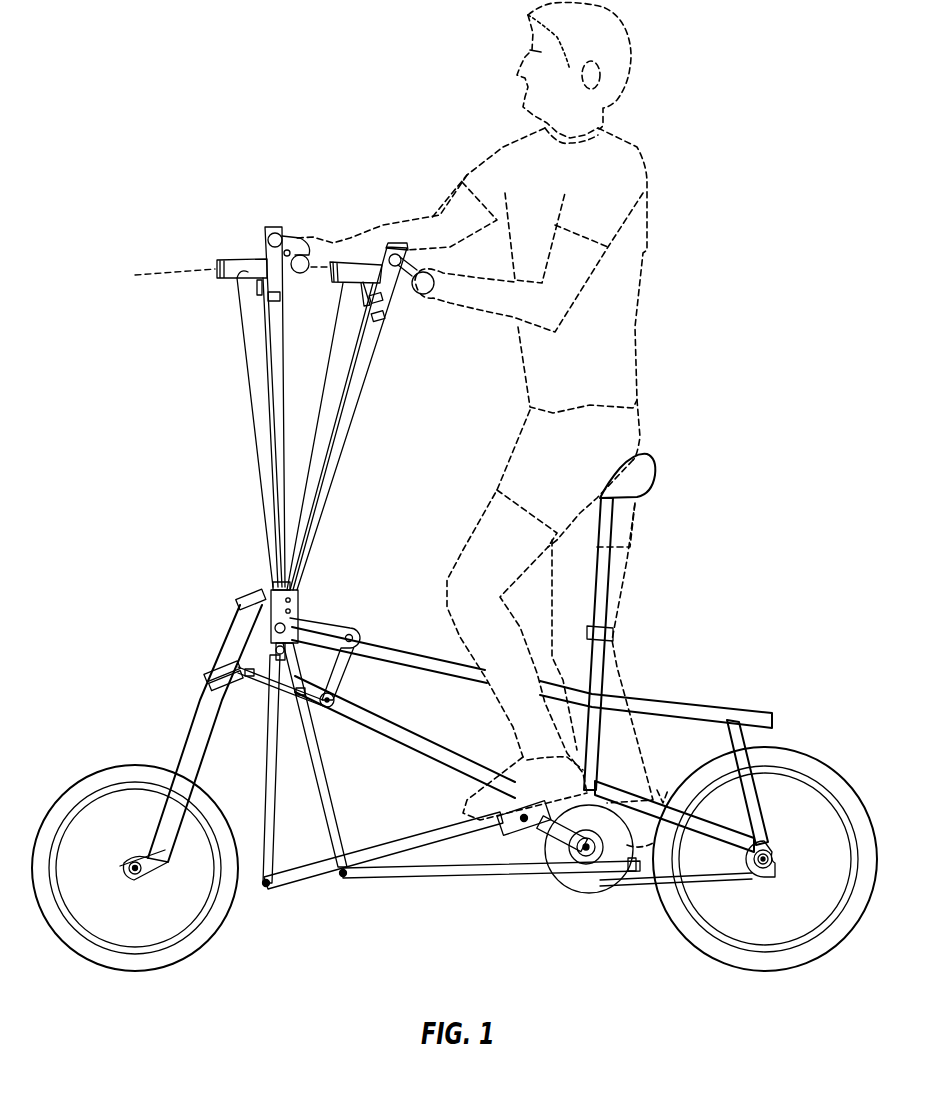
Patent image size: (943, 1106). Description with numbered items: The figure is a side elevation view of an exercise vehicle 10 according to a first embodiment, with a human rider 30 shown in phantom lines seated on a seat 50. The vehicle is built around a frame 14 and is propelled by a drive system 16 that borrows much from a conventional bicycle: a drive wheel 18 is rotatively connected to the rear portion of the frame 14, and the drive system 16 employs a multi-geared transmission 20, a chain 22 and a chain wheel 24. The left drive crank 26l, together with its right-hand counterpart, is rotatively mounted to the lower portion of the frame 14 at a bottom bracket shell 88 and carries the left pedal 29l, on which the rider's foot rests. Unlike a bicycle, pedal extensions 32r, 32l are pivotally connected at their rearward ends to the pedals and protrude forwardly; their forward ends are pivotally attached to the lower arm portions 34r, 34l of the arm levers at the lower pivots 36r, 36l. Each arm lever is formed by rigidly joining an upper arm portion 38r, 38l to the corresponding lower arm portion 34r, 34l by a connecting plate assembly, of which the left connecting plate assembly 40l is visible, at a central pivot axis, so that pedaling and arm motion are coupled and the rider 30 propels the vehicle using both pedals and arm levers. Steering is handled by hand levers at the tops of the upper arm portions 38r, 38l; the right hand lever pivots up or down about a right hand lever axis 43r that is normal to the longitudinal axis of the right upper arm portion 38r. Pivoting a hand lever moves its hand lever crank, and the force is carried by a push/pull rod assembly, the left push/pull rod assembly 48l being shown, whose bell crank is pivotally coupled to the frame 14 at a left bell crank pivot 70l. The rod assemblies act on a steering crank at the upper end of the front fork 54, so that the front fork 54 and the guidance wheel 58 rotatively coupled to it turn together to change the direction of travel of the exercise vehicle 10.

The exercise vehicle 10 is at (731, 118).
The frame 14 is at (660, 699).
The drive system 16 is at (642, 907).
The drive wheel 18 is at (830, 752).
The multi-geared transmission 20 is at (787, 860).
The chain 22 is at (743, 887).
The chain wheel 24 is at (595, 905).
The left drive crank 26l is at (553, 863).
The left pedal 29l is at (515, 830).
The rider 30 is at (643, 253).
The left pedal extension 32l is at (317, 883).
The right pedal extension 32r is at (416, 865).
The left lower arm portion 34l is at (267, 753).
The right lower arm portion 34r is at (297, 707).
The left lower pivot 36l is at (267, 893).
The right lower pivot 36r is at (350, 882).
The left upper arm portion 38l is at (317, 424).
The right upper arm portion 38r is at (242, 315).
The left connecting plate assembly 40l is at (245, 622).
The right hand lever axis 43r is at (220, 258).
The left push/pull rod assembly 48l is at (313, 623).
The seat 50 is at (658, 472).
The front fork 54 is at (190, 742).
The guidance wheel 58 is at (78, 783).
The left bell crank pivot 70l is at (348, 625).
The bottom bracket shell 88 is at (658, 792).